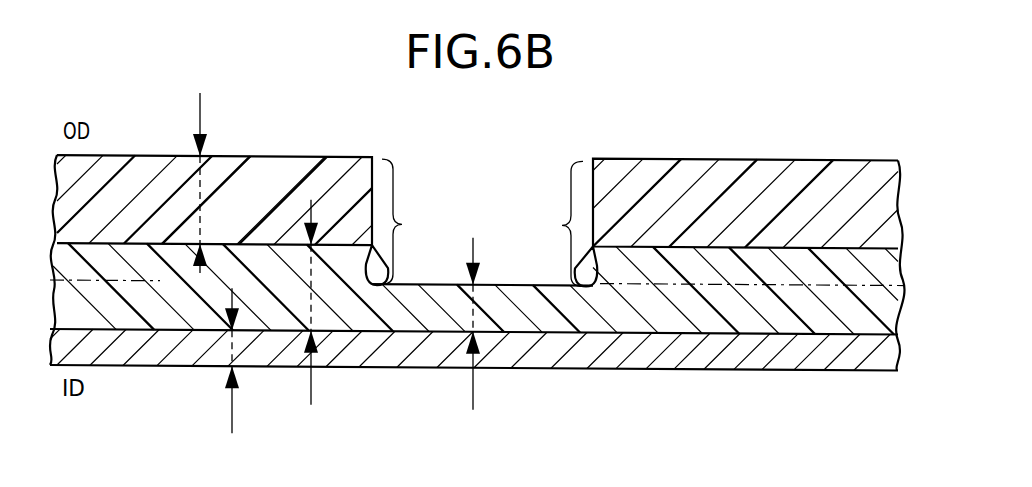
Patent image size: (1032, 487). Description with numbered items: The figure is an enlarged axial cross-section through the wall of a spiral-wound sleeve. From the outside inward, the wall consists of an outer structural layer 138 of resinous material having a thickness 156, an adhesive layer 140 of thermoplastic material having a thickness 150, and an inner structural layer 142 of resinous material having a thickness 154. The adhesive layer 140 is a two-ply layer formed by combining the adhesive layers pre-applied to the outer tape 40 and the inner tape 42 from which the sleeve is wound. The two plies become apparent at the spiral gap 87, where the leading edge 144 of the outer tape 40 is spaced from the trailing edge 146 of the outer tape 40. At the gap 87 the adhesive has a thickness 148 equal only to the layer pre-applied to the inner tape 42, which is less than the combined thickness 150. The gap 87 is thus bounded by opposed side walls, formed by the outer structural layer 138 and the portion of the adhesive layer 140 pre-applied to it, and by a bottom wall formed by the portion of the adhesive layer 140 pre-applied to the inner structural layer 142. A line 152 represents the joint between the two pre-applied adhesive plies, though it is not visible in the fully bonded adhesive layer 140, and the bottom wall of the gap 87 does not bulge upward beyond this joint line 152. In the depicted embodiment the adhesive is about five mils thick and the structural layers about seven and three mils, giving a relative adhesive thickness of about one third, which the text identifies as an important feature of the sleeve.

The outer tape 40 is at (110, 148).
The inner tape 42 is at (156, 374).
The spiral gap 87 is at (485, 203).
The outer structural layer 138 is at (733, 172).
The adhesive layer 140 is at (633, 263).
The inner structural layer 142 is at (668, 345).
The leading edge 144 is at (550, 223).
The trailing edge 146 is at (414, 221).
The thickness of adhesive layer at gap 148 is at (474, 392).
The thickness of adhesive layer 150 is at (311, 382).
The joint line 152 is at (757, 288).
The thickness of inner structural layer 154 is at (232, 420).
The thickness of outer structural layer 156 is at (201, 122).